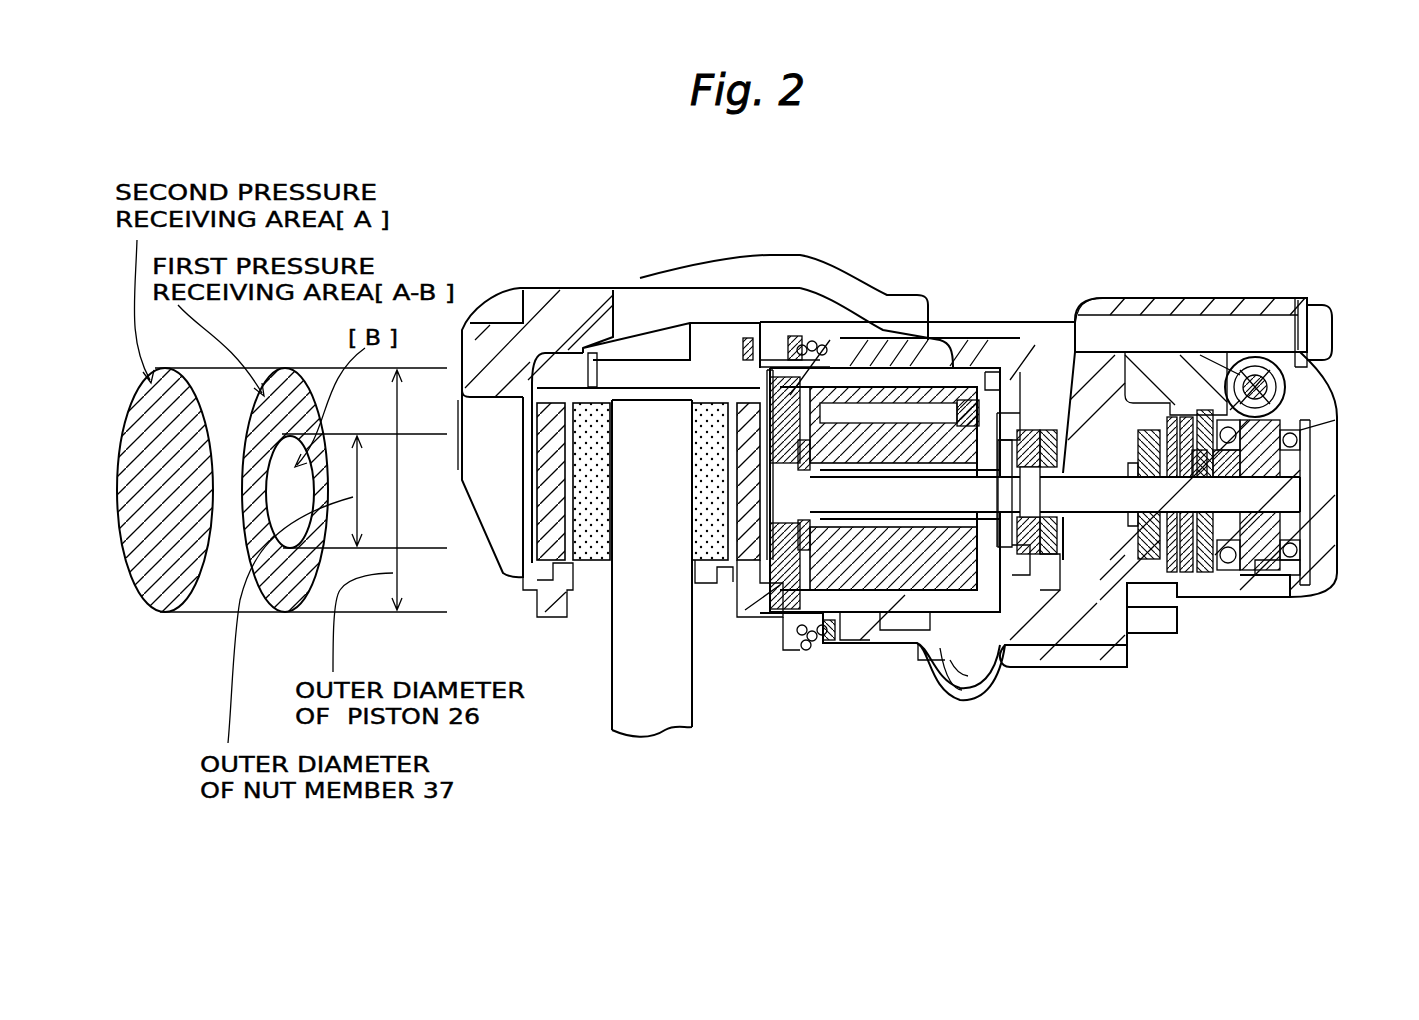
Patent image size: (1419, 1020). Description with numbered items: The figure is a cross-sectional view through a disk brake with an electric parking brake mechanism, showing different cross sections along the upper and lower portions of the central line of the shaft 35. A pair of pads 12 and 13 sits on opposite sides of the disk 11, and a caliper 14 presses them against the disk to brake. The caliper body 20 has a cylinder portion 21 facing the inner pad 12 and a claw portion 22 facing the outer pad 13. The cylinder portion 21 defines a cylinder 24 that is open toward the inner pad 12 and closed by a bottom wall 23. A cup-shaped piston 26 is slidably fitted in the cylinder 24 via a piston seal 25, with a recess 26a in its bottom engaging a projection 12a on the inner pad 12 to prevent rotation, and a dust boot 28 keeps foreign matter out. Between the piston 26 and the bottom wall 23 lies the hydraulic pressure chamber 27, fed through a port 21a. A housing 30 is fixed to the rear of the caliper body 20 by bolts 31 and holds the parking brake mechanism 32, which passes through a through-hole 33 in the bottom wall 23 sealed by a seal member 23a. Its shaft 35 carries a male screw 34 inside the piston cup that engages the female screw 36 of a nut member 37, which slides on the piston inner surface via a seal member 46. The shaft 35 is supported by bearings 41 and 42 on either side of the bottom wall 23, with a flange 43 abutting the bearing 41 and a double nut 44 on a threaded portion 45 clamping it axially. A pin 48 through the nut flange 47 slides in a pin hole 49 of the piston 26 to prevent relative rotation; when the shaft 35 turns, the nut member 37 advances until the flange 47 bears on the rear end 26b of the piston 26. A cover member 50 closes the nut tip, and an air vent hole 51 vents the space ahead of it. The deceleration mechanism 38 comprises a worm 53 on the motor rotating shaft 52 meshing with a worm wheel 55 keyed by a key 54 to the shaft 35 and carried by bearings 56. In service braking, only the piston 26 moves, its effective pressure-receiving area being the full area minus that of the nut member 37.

The disk 11 is at (620, 713).
The pad 12 is at (721, 388).
The projection 12a is at (797, 603).
The pad 13 is at (580, 388).
The caliper 14 is at (486, 286).
The caliper body 20 is at (801, 240).
The cylinder portion 21 is at (900, 630).
The port 21a is at (1022, 322).
The claw portion 22 is at (493, 473).
The bottom wall 23 is at (1068, 610).
The seal member 23a is at (1103, 298).
The cylinder 24 is at (930, 647).
The piston seal 25 is at (857, 640).
The piston 26 is at (944, 352).
The recess 26a is at (720, 583).
The rear end 26b is at (957, 690).
The hydraulic pressure chamber 27 is at (1018, 392).
The dust boot 28 is at (790, 335).
The housing 30 is at (1227, 313).
The bolts 31 is at (1317, 338).
The parking brake mechanism 32 is at (1045, 420).
The through-hole 33 is at (1085, 600).
The male screw 34 is at (823, 640).
The shaft 35 is at (912, 630).
The female screw 36 is at (902, 470).
The nut member 37 is at (896, 418).
The deceleration mechanism 38 is at (1267, 575).
The bearing 41 is at (1057, 548).
The bearing 42 is at (1165, 580).
The flange 43 is at (1027, 560).
The double nut 44 is at (1207, 577).
The threaded portion 45 is at (1200, 350).
The seal member 46 is at (790, 615).
The flange 47 is at (962, 677).
The pin 48 is at (990, 383).
The pin hole 49 is at (852, 400).
The cover member 50 is at (790, 495).
The air vent hole 51 is at (745, 337).
The rotating shaft 52 is at (1290, 393).
The worm 53 is at (1262, 360).
The key 54 is at (1307, 460).
The worm wheel 55 is at (1293, 520).
The bearings 56 is at (1297, 550).